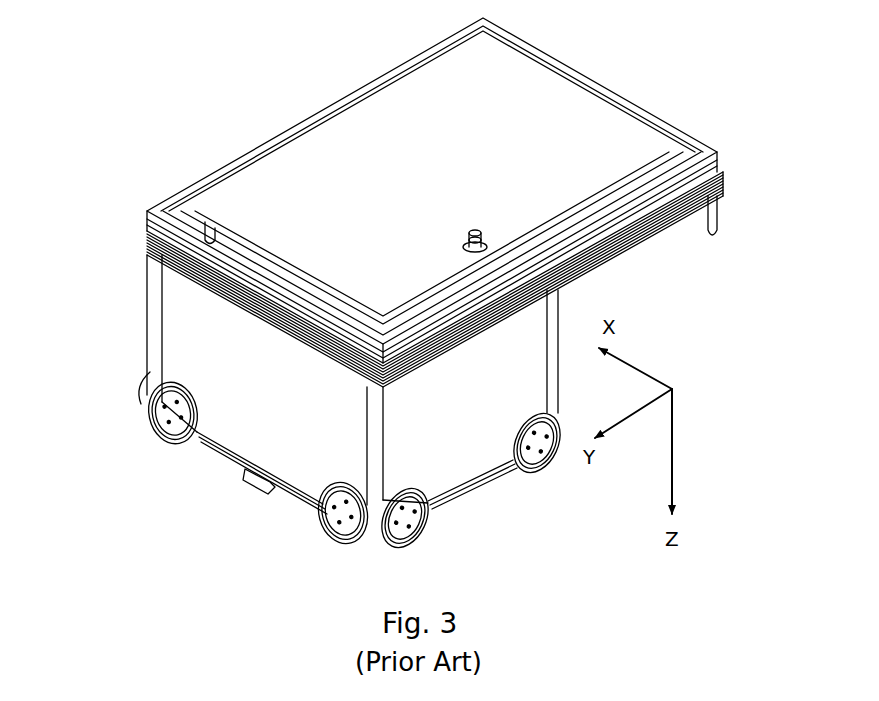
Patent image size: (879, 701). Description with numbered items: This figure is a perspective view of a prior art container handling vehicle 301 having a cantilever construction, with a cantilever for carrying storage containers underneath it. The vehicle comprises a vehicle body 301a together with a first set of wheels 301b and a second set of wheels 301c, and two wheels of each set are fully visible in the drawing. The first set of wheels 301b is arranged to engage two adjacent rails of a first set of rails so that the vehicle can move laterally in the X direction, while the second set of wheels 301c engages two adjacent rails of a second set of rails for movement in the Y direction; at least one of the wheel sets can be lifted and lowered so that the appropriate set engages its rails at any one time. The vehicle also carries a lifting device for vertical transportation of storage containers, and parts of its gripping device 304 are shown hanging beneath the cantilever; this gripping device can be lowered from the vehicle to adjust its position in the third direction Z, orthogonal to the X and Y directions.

The container handling vehicle 301 is at (172, 113).
The vehicle body 301a is at (147, 230).
The first set of wheels 301b is at (500, 500).
The second set of wheels 301c is at (203, 483).
The gripping device 304 is at (725, 233).